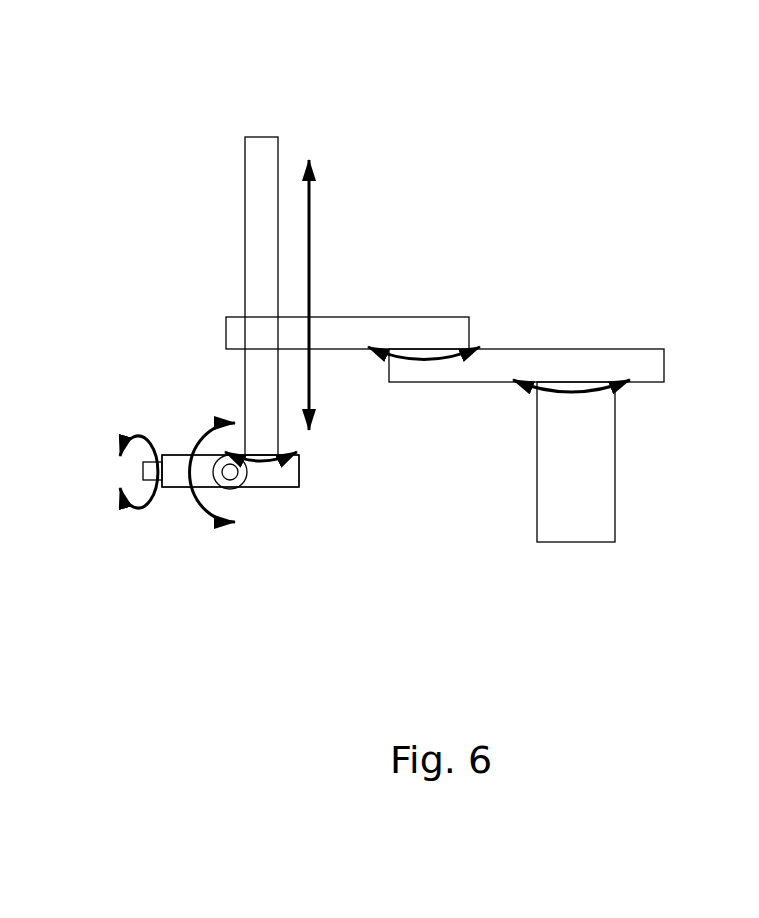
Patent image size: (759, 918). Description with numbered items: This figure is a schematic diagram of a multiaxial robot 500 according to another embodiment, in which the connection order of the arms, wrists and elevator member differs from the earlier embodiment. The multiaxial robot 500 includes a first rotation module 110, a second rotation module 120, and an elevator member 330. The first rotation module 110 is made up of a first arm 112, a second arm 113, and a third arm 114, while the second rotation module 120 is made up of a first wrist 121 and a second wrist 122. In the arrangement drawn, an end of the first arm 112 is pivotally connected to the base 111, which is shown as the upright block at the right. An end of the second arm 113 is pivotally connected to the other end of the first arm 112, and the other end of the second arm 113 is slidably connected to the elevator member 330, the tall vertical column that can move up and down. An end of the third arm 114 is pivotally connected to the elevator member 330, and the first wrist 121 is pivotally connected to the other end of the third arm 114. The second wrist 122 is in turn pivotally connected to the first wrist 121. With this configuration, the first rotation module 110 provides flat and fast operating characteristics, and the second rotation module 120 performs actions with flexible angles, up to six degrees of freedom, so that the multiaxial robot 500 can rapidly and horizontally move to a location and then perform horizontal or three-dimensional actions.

The multiaxial robot 500 is at (120, 38).
The elevator member 330 is at (262, 190).
The second rotation module 120 is at (215, 340).
The second wrist 122 is at (150, 467).
The first wrist 121 is at (175, 465).
The first rotation module 110 is at (523, 590).
The third arm 114 is at (287, 475).
The second arm 113 is at (344, 332).
The first arm 112 is at (448, 368).
The base 111 is at (555, 482).